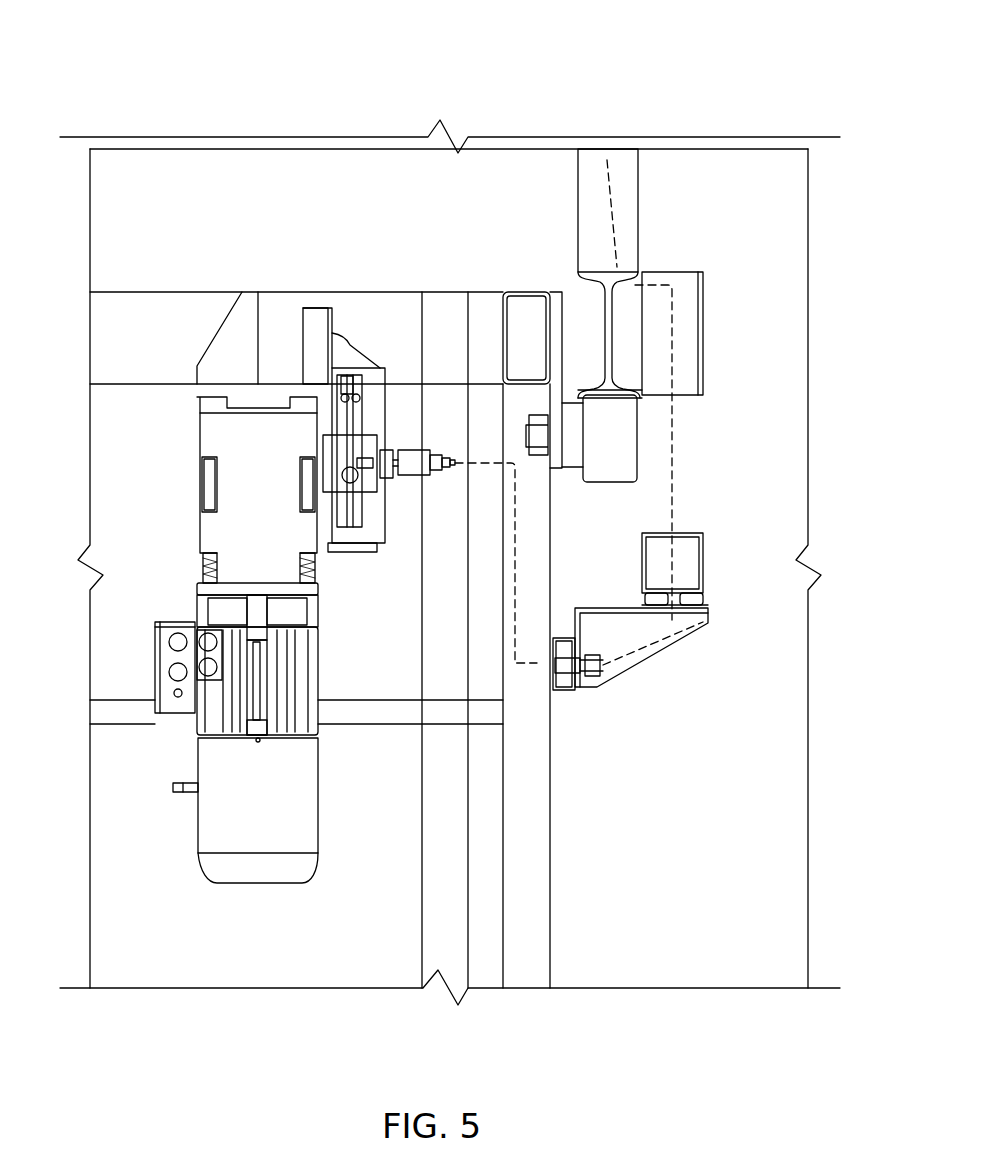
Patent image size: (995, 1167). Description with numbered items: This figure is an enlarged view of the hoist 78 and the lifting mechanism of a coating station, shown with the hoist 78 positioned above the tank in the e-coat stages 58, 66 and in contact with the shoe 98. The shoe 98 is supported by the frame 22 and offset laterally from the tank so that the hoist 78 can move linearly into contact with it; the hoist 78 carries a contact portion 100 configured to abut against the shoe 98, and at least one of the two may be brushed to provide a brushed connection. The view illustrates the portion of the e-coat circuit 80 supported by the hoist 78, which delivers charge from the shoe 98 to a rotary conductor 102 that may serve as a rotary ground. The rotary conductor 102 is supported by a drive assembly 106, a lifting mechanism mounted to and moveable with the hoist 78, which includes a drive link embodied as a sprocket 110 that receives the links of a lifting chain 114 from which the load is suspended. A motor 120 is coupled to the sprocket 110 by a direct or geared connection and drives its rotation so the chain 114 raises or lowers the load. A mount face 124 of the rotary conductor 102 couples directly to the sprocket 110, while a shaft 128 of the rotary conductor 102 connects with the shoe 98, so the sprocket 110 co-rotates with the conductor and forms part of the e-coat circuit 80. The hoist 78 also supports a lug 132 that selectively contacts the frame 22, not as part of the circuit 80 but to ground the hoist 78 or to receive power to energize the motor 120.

The frame 22 is at (137, 148).
The e-coat stage 58 is at (216, 62).
The e-coat stage 66 is at (449, 557).
The hoist 78 is at (184, 338).
The e-coat circuit 80 is at (673, 303).
The shoe 98 is at (636, 641).
The contact portion 100 is at (573, 627).
The rotary conductor 102 is at (410, 447).
The drive assembly 106 is at (181, 491).
The sprocket 110 is at (350, 534).
The lifting chain 114 is at (334, 333).
The motor 120 is at (232, 448).
The mount face 124 is at (385, 476).
The shaft 128 is at (442, 452).
The lug 132 is at (572, 430).